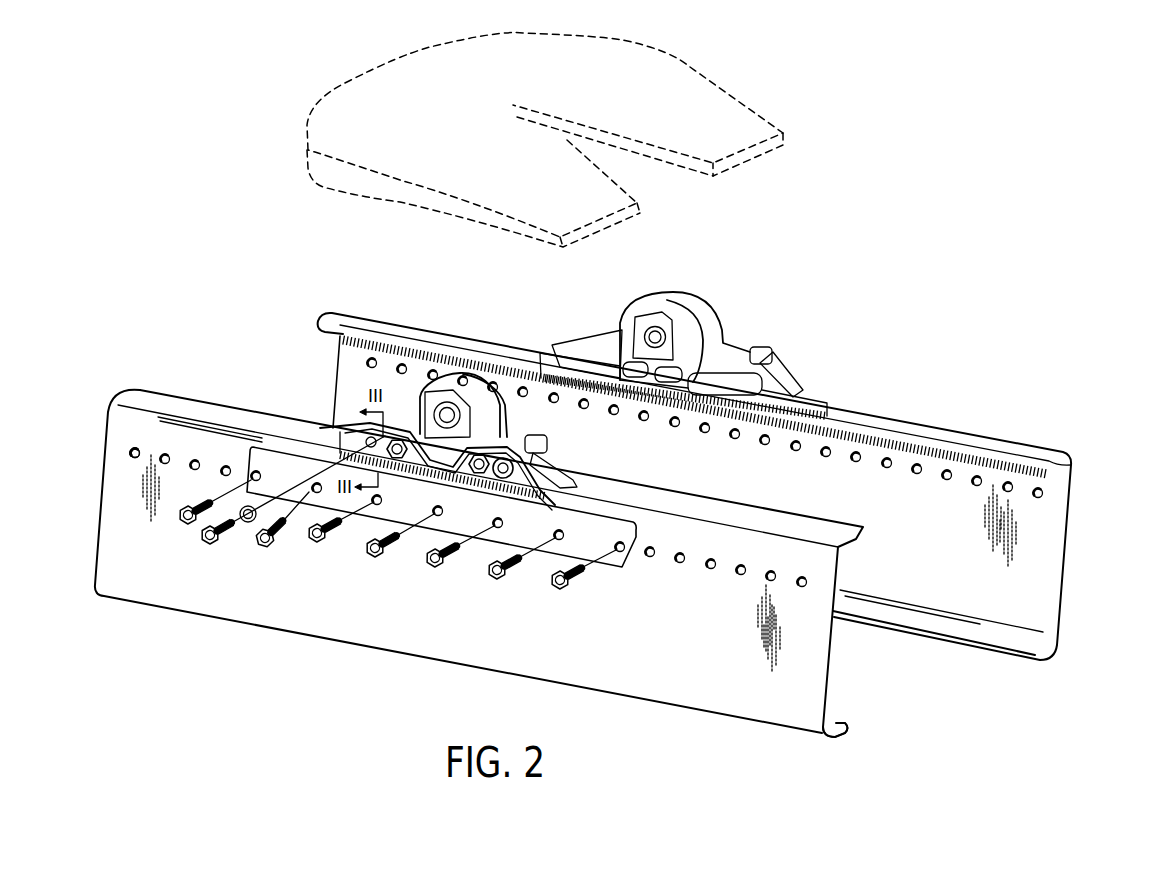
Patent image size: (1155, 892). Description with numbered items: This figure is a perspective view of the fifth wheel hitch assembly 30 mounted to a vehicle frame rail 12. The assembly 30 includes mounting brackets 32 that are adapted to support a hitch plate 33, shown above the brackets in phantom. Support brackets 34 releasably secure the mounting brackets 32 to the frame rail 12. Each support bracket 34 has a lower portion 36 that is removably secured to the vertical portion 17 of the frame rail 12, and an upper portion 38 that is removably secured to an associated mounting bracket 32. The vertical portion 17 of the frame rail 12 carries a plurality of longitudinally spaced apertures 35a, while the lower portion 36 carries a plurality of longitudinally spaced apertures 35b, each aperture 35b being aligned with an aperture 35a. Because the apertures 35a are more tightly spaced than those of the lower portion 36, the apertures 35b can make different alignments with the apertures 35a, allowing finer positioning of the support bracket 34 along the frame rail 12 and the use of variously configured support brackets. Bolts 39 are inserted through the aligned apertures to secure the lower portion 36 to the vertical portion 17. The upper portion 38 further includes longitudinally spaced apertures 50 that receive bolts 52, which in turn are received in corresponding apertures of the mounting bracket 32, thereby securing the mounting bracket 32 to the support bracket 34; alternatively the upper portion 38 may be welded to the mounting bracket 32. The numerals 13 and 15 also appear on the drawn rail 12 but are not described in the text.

The vehicle frame rail 12 is at (1074, 560).
The upper lip of front wall 13 is at (838, 532).
The lower hook lip 15 is at (832, 722).
The vertical portion 17 is at (715, 647).
The fifth wheel hitch assembly 30 is at (806, 219).
The mounting bracket 32 is at (692, 286).
The hitch plate 33 is at (694, 62).
The support bracket 34 is at (425, 537).
The apertures 35a is at (130, 455).
The apertures 35b is at (247, 475).
The lower portion 36 is at (572, 545).
The upper portion 38 is at (541, 497).
The bolts 39 is at (312, 545).
The apertures 50 is at (371, 442).
The bolts 52 is at (507, 445).